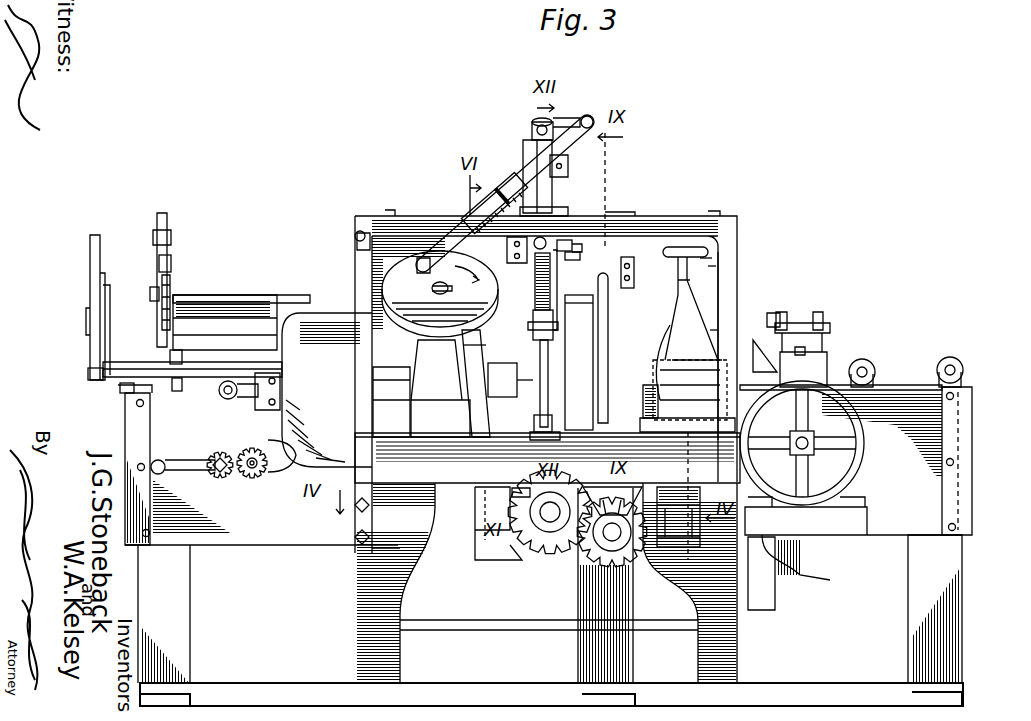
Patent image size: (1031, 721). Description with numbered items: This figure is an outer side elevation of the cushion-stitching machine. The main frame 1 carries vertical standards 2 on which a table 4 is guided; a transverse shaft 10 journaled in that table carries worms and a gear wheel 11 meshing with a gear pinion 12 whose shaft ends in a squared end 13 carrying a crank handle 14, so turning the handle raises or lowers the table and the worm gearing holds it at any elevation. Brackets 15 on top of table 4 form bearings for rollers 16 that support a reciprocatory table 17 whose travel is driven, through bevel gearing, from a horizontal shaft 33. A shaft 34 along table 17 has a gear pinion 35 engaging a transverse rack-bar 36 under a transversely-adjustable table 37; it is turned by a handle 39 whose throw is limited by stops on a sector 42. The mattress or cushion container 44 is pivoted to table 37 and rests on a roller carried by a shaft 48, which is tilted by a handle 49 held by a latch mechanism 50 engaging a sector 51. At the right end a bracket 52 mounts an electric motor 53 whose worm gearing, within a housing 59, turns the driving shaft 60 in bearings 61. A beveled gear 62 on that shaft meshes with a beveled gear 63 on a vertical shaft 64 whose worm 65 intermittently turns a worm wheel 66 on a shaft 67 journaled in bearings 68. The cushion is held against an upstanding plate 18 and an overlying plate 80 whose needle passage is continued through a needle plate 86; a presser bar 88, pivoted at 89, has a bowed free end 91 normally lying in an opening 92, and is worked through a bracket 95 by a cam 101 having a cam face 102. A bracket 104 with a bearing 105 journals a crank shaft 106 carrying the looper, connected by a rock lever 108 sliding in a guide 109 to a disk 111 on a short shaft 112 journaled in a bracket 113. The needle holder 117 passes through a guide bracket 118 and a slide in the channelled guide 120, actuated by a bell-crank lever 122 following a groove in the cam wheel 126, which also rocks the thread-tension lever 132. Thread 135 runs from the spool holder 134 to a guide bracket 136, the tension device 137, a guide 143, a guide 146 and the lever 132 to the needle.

The main frame 1 is at (352, 597).
The vertical standards 2 is at (148, 563).
The table 4 is at (133, 440).
The transverse shaft 10 is at (255, 478).
The gear wheel 11 is at (268, 466).
The gear pinion 12 is at (222, 480).
The squared end 13 is at (218, 456).
The crank handle 14 is at (160, 469).
The brackets 15 is at (137, 394).
The rollers 16 is at (122, 385).
The reciprocatory table 17 is at (115, 358).
The upstanding plate 18 is at (730, 250).
The horizontal shaft 33 is at (545, 522).
The shaft 34 is at (92, 371).
The gear pinion 35 is at (176, 392).
The transverse rack-bar 36 is at (170, 352).
The transversely-adjustable table 37 is at (215, 330).
The handle 39 is at (93, 250).
The sector 42 is at (104, 326).
The cushion container 44 is at (262, 298).
The shaft 48 is at (156, 340).
The handle 49 is at (163, 214).
The latch mechanism 50 is at (168, 264).
The sector 51 is at (173, 292).
The bracket 52 is at (812, 556).
The electric motor 53 is at (870, 468).
The housing 59 is at (830, 357).
The driving shaft 60 is at (517, 372).
The bearings 61 is at (391, 389).
The beveled gear 62 is at (690, 305).
The beveled gear 63 is at (712, 330).
The vertical shaft 64 is at (690, 465).
The worm 65 is at (680, 550).
The worm wheel 66 is at (628, 545).
The shaft 67 is at (600, 545).
The bearings 68 is at (636, 488).
The overlying plate 80 is at (578, 260).
The needle plate 86 is at (543, 238).
The presser bar 88 is at (356, 233).
The pivot 89 is at (364, 228).
The bowed end 91 is at (580, 250).
The opening 92 is at (566, 245).
The bracket 95 is at (412, 262).
The cam 101 is at (488, 440).
The cam face 102 is at (473, 437).
The bracket 104 is at (549, 180).
The bearing 105 is at (530, 130).
The crank shaft 106 is at (553, 120).
The rock lever 108 is at (590, 115).
The guide 109 is at (502, 178).
The disk 111 is at (417, 263).
The short shaft 112 is at (432, 288).
The bracket 113 is at (450, 383).
The needle holder 117 is at (563, 432).
The guide bracket 118 is at (540, 424).
The channelled guide 120 is at (535, 322).
The bell-crank lever 122 is at (553, 305).
The cam wheel 126 is at (632, 285).
The thread-tension lever 132 is at (594, 312).
The spool holder 134 is at (718, 330).
The thread 135 is at (716, 268).
The guide bracket 136 is at (712, 258).
The tension device 137 is at (802, 443).
The guide 143 is at (690, 400).
The guide 146 is at (650, 390).